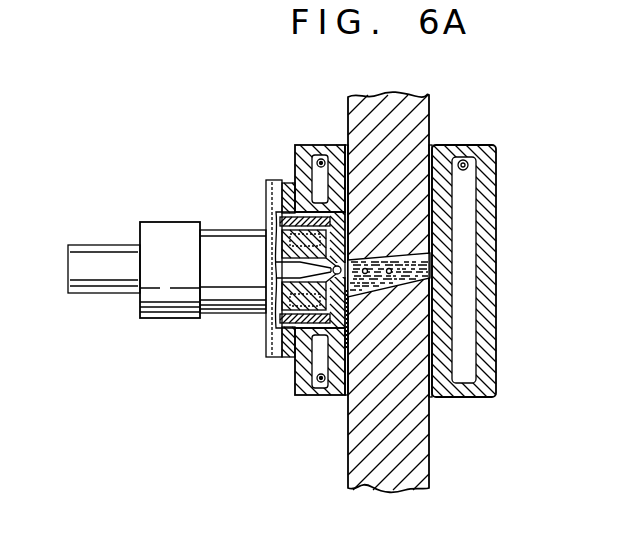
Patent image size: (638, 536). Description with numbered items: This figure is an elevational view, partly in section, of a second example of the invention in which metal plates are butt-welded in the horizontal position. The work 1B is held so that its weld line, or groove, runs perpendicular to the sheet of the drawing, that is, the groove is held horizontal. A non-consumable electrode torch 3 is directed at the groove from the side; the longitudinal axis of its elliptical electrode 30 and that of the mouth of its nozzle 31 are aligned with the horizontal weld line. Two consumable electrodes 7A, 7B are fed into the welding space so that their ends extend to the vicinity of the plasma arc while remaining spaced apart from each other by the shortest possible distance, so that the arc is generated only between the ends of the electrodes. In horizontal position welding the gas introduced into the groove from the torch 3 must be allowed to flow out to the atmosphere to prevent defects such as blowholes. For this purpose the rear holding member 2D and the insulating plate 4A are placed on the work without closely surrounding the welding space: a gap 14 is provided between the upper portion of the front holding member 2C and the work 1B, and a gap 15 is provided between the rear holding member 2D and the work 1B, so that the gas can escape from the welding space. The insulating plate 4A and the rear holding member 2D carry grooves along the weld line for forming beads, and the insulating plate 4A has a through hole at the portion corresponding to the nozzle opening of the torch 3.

The work 1B is at (418, 95).
The front holding member 2C is at (302, 166).
The rear holding member 2D is at (497, 162).
The non-consumable electrode torch 3 is at (243, 246).
The insulating plate 4A is at (352, 304).
The consumable electrode 7A is at (365, 268).
The consumable electrode 7B is at (389, 268).
The gap 14 is at (344, 147).
The gap 15 is at (433, 150).
The elliptical electrode 30 is at (268, 314).
The nozzle 31 is at (341, 338).